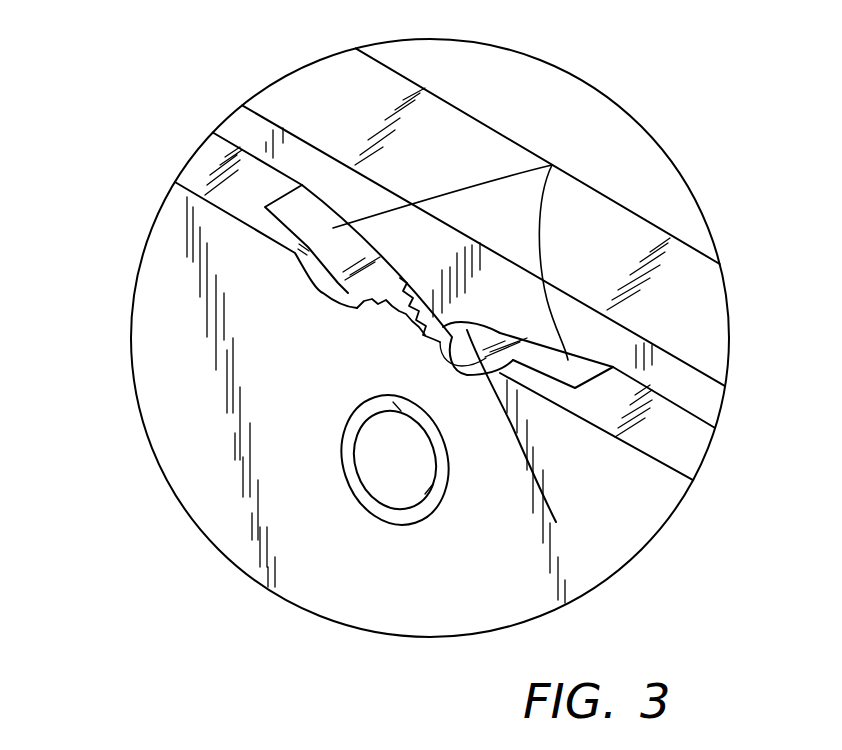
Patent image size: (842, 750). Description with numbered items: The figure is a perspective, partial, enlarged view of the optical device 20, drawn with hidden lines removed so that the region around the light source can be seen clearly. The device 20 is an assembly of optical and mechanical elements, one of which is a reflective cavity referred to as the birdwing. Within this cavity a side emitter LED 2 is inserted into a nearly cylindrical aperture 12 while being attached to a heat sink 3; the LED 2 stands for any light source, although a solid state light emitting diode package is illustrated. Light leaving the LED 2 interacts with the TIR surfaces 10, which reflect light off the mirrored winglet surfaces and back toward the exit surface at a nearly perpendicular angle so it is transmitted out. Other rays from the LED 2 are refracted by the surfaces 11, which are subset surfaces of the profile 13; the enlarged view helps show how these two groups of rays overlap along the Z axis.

The device 20 is at (131, 104).
The heat sink 3 is at (665, 302).
The surfaces 11 is at (403, 316).
The profile 13 is at (407, 347).
The TIR surfaces 10 is at (400, 288).
The aperture 12 is at (346, 484).
The side emitter LED 2 is at (405, 458).